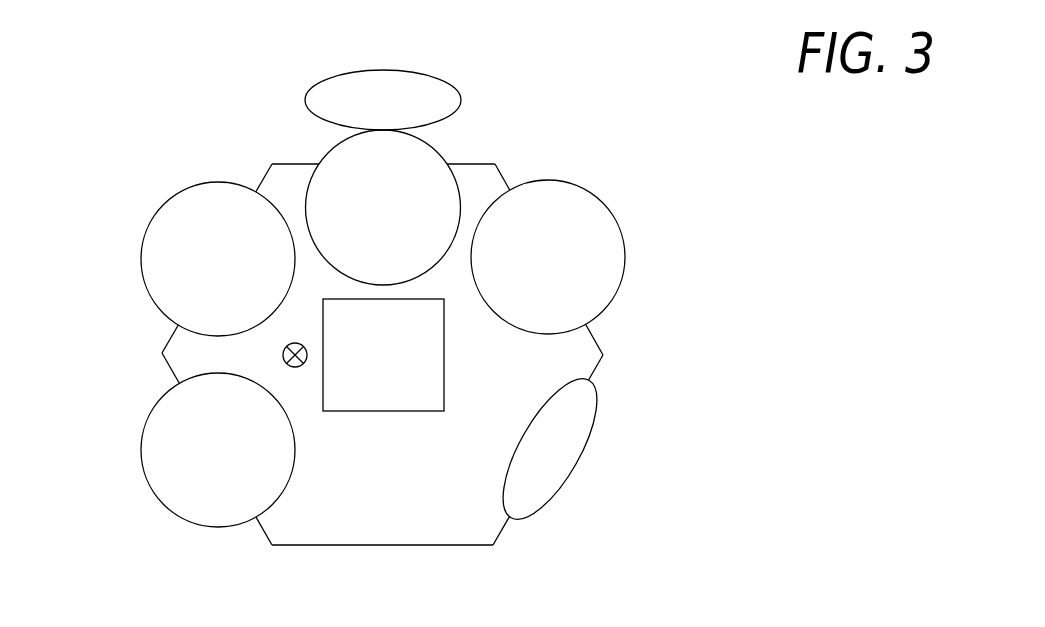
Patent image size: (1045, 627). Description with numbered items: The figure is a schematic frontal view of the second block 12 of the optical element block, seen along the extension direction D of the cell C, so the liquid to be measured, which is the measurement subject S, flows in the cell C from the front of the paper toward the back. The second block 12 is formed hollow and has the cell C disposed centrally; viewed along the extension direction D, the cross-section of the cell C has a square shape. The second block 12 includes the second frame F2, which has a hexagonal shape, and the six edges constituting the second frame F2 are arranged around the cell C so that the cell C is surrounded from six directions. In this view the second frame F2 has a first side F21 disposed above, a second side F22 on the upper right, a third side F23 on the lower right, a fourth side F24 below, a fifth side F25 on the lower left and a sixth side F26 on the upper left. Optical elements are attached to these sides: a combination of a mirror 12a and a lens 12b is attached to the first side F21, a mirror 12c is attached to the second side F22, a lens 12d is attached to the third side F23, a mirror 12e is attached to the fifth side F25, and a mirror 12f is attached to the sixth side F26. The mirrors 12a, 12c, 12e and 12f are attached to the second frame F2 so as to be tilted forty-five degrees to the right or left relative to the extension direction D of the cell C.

The second block 12 is at (427, 48).
The mirror 12a is at (438, 152).
The lens 12b is at (456, 88).
The mirror 12c is at (624, 234).
The lens 12d is at (580, 460).
The mirror 12e is at (142, 455).
The mirror 12f is at (148, 222).
The second frame F2 is at (431, 350).
The first side F21 is at (478, 163).
The second side F22 is at (594, 333).
The third side F23 is at (598, 370).
The fourth side F24 is at (424, 546).
The fifth side F25 is at (263, 525).
The sixth side F26 is at (262, 175).
The cell C is at (444, 349).
The extension direction D is at (295, 372).
The measurement subject S is at (382, 373).